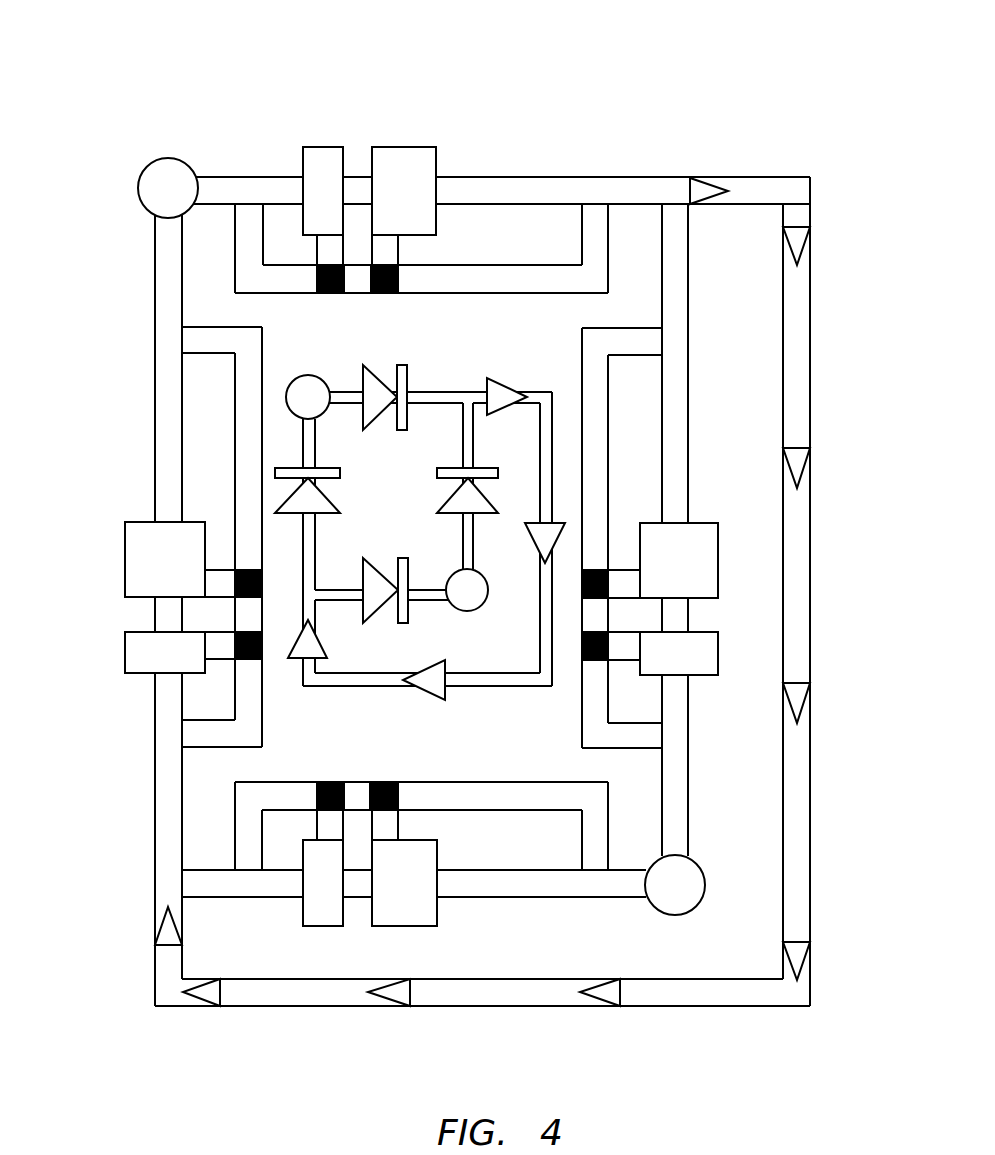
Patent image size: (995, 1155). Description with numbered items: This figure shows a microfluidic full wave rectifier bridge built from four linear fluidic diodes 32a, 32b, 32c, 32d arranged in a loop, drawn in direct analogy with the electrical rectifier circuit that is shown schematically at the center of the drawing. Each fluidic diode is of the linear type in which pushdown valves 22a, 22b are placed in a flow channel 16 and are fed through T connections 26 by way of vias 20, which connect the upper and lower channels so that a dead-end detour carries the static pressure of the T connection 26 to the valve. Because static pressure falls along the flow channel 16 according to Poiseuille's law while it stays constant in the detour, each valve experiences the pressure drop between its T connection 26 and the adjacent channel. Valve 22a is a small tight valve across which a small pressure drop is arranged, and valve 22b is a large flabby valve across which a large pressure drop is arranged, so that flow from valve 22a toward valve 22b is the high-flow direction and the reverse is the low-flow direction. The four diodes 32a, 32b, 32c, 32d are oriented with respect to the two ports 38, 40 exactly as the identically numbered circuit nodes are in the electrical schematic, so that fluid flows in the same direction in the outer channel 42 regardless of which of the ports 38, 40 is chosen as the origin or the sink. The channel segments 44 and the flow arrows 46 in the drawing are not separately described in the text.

The channel 16 is at (473, 180).
The via 20 is at (372, 292).
The pushdown valve 22a is at (307, 147).
The pushdown valve 22b is at (425, 147).
The T connection 26 is at (210, 150).
The linear fluidic diode 32a is at (360, 130).
The linear fluidic diode 32b is at (445, 498).
The linear fluidic diode 32c is at (355, 945).
The linear fluidic diode 32d is at (328, 500).
The port 38 is at (150, 170).
The port 40 is at (700, 887).
The outer channel 42 is at (805, 503).
The return line 44 is at (158, 882).
The flow direction arrow 46 is at (683, 178).